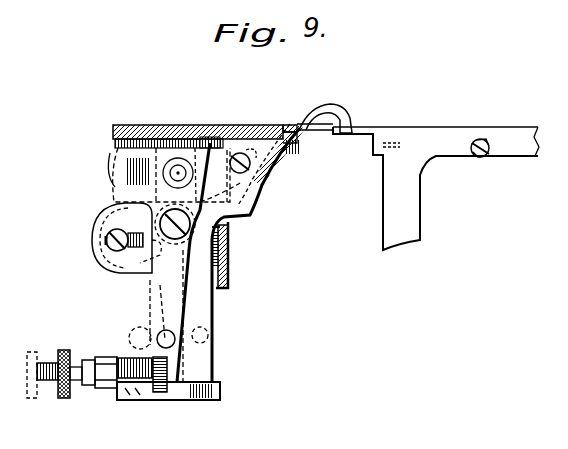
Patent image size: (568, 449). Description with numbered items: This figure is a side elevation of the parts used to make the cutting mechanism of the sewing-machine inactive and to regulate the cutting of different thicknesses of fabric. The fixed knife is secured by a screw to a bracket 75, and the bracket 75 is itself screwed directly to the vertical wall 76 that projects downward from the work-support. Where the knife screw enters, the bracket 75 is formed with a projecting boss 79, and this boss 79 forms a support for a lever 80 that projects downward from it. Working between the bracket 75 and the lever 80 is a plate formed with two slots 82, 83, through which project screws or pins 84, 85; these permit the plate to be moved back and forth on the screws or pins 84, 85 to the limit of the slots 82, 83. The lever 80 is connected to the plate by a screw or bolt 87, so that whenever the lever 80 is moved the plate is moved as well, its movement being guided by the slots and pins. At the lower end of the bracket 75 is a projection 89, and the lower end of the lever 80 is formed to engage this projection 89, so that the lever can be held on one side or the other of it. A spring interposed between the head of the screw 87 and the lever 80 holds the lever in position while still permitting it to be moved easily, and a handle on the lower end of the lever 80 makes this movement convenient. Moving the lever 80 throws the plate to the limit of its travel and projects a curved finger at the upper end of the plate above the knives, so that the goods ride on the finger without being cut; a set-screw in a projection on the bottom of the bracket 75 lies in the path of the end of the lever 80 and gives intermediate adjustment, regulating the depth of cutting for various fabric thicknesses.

The bracket 75 is at (203, 188).
The vertical wall 76 is at (340, 116).
The projecting boss 79 is at (160, 203).
The lever 80 is at (138, 358).
The slot 82 is at (100, 246).
The slot 83 is at (233, 157).
The screw or pin 84 is at (106, 237).
The screw or pin 85 is at (248, 150).
The screw or bolt 87 is at (162, 215).
The projection 89 is at (198, 400).